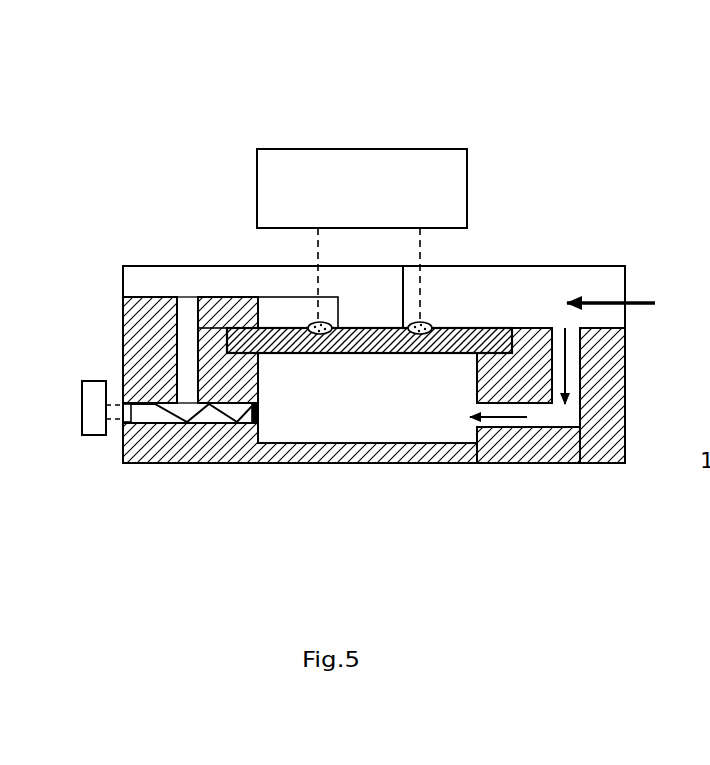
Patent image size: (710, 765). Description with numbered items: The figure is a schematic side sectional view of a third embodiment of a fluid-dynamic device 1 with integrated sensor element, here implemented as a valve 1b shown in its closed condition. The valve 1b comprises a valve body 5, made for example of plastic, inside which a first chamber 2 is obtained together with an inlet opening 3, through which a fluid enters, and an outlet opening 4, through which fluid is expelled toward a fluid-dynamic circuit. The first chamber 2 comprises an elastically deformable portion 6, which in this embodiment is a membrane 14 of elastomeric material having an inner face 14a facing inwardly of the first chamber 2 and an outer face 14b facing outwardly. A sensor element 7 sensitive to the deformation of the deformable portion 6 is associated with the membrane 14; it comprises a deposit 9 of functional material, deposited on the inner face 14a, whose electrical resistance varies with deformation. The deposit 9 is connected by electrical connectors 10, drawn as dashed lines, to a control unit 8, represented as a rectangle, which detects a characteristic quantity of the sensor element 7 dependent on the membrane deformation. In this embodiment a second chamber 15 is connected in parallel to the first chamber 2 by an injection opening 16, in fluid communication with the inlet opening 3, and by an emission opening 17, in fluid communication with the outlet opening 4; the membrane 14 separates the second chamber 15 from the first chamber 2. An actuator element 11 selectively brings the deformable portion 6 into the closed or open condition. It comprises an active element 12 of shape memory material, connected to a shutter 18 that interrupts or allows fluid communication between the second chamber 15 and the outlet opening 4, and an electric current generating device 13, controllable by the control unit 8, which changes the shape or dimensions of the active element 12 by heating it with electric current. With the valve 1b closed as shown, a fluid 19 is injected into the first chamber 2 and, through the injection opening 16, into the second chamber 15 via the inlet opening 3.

The fluid-dynamic device 1 is at (574, 157).
The valve 1b is at (629, 361).
The first chamber 2 is at (494, 307).
The inlet opening 3 is at (630, 292).
The outlet opening 4 is at (122, 285).
The valve body 5 is at (583, 449).
The elastically deformable portion 6 is at (323, 356).
The sensor element 7 is at (282, 323).
The control unit 8 is at (373, 172).
The deposit of functional material 9 is at (309, 323).
The electrical connectors 10 is at (315, 250).
The actuator element 11 is at (66, 416).
The active element 12 is at (216, 418).
The electric current generating device 13 is at (95, 426).
The membrane 14 is at (358, 356).
The inner face 14a is at (464, 324).
The outer face 14b is at (417, 359).
The second chamber 15 is at (413, 428).
The injection opening 16 is at (581, 390).
The emission opening 17 is at (175, 367).
The shutter 18 is at (263, 415).
The fluid 19 is at (593, 300).